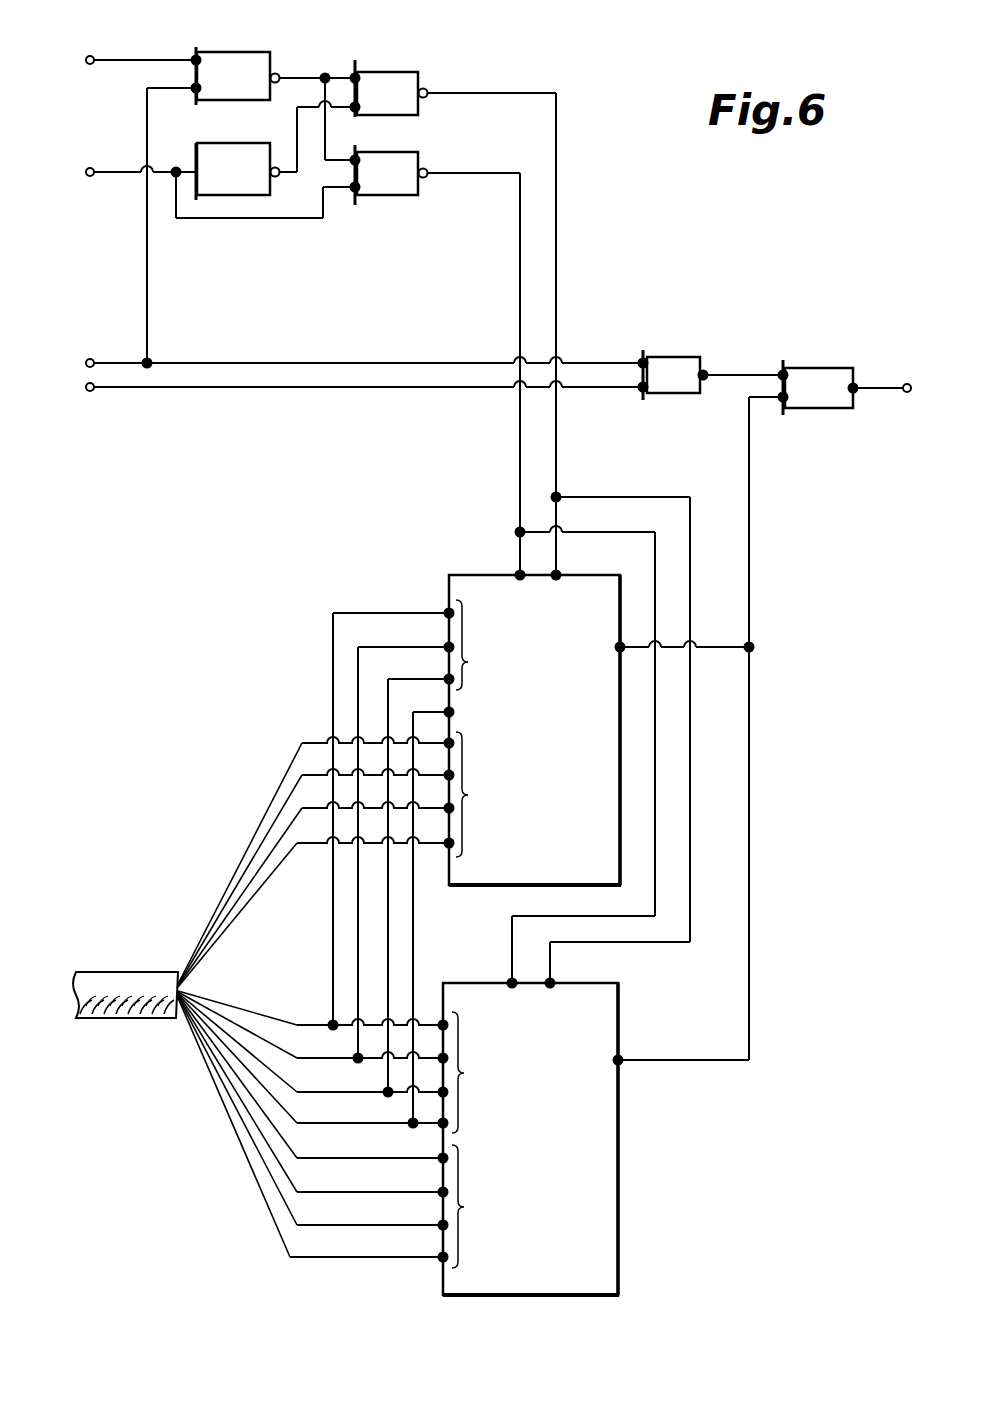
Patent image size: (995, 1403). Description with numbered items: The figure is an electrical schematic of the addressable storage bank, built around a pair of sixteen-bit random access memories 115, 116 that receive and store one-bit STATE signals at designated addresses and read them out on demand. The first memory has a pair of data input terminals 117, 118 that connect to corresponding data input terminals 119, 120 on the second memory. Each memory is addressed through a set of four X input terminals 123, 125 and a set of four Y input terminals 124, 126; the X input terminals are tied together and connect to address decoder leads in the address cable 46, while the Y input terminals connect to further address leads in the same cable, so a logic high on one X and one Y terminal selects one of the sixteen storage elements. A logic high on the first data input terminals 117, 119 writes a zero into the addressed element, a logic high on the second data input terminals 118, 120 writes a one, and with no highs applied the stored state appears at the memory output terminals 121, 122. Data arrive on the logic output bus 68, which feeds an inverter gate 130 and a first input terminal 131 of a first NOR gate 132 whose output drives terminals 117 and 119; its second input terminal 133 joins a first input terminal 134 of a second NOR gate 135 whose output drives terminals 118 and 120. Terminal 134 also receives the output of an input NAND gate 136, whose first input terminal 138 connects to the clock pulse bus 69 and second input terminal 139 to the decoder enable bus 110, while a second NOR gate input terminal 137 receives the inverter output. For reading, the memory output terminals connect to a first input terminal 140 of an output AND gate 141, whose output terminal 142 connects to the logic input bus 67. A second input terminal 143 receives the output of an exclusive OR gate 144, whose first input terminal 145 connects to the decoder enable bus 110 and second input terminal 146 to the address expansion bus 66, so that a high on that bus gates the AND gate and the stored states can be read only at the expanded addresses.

The address cable 46 is at (151, 972).
The address expansion bus 66 is at (92, 392).
The logic input bus 67 is at (907, 394).
The logic output bus 68 is at (95, 168).
The clock pulse bus 69 is at (95, 56).
The decoder enable bus 110 is at (94, 358).
The random access memory 115 is at (475, 574).
The random access memory 116 is at (620, 1192).
The data input terminal 117 is at (518, 572).
The data input terminal 118 is at (560, 573).
The data input terminal 119 is at (510, 980).
The data input terminal 120 is at (553, 981).
The memory output terminal 121 is at (623, 645).
The memory output terminal 122 is at (619, 1058).
The X input terminals 123 is at (426, 861).
The Y input terminals 124 is at (347, 859).
The X input terminals 125 is at (344, 1062).
The Y input terminals 126 is at (343, 1131).
The inverter gate 130 is at (246, 154).
The first input terminal 131 is at (350, 206).
The first NOR gate 132 is at (395, 196).
The second input terminal 133 is at (355, 152).
The first input terminal 134 is at (354, 64).
The second NOR gate 135 is at (418, 71).
The input NAND gate 136 is at (252, 53).
The second NOR gate input terminal 137 is at (352, 104).
The first input terminal 138 is at (192, 58).
The second input terminal 139 is at (193, 96).
The first input terminal 140 is at (783, 402).
The output AND gate 141 is at (838, 367).
The output terminal 142 is at (858, 386).
The second input terminal 143 is at (781, 371).
The exclusive OR gate 144 is at (681, 356).
The first input terminal 145 is at (643, 354).
The second input terminal 146 is at (640, 392).